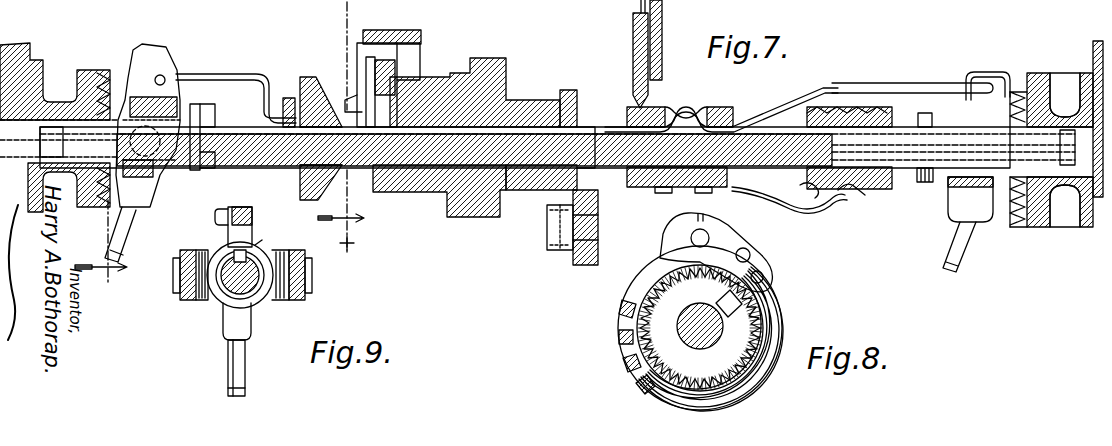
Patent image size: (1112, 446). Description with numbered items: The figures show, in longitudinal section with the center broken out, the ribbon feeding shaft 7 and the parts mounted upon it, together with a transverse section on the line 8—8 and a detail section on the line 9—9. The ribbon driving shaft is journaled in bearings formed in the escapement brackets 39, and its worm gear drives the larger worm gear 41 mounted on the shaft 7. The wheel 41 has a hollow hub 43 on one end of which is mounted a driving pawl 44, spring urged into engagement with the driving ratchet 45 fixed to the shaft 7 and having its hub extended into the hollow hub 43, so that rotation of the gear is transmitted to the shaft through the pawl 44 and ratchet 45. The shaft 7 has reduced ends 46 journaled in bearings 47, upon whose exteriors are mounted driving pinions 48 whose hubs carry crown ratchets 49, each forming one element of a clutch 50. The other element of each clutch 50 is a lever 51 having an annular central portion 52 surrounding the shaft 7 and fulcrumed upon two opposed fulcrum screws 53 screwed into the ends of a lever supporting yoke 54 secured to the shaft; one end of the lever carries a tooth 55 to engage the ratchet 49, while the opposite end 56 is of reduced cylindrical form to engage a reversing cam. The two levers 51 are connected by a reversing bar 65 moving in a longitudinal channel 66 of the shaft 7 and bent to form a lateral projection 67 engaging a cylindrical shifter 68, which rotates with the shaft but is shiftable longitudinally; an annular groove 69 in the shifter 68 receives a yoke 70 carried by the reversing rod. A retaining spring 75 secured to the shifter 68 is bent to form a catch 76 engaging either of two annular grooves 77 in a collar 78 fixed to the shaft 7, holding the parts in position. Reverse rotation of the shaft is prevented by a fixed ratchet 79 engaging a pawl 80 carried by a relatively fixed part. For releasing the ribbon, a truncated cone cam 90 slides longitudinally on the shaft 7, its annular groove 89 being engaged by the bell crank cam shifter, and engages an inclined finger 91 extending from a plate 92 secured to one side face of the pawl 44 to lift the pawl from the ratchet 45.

In FIG. 7, the ribbon feeding shaft 7 is at (904, 133).
In FIG. 7, the section line 8— 8 is at (341, 137).
In FIG. 9, the section line 9— 9 is at (101, 252).
In FIG. 7, the escapement brackets 39 is at (580, 265).
In FIG. 7, the worm gear 41 is at (482, 73).
In FIG. 8, the worm gear 41 is at (625, 373).
In FIG. 7, the hollow hub 43 is at (432, 205).
In FIG. 8, the hollow hub 43 is at (640, 352).
In FIG. 7, the driving pawl 44 is at (370, 74).
In FIG. 8, the driving pawl 44 is at (768, 257).
In FIG. 7, the driving ratchet 45 is at (392, 200).
In FIG. 8, the driving ratchet 45 is at (677, 320).
In FIG. 7, the reduced ends 46 is at (77, 120).
In FIG. 7, the bearings 47 is at (1062, 215).
In FIG. 7, the driving pinions 48 is at (38, 60).
In FIG. 7, the crown ratchets 49 is at (103, 70).
In FIG. 7, the clutch 50 is at (1012, 66).
In FIG. 7, the lever 51 is at (145, 190).
In FIG. 9, the lever 51 is at (226, 336).
In FIG. 7, the annular central portion 52 is at (165, 177).
In FIG. 9, the annular central portion 52 is at (262, 300).
In FIG. 7, the fulcrum screws 53 is at (178, 105).
In FIG. 9, the fulcrum screws 53 is at (173, 291).
In FIG. 7, the lever supporting yoke 54 is at (204, 170).
In FIG. 9, the lever supporting yoke 54 is at (270, 256).
In FIG. 7, the tooth 55 is at (128, 85).
In FIG. 7, the reduced cylindrical end 56 is at (130, 238).
In FIG. 9, the reduced cylindrical end 56 is at (246, 369).
In FIG. 7, the reversing bar 65 is at (235, 74).
In FIG. 9, the reversing bar 65 is at (216, 218).
In FIG. 7, the longitudinal channel 66 is at (262, 120).
In FIG. 9, the longitudinal channel 66 is at (222, 300).
In FIG. 7, the lateral projection 67 is at (687, 107).
In FIG. 7, the cylindrical shifter 68 is at (724, 107).
In FIG. 7, the annular groove 69 is at (643, 190).
In FIG. 7, the yoke 70 is at (636, 96).
In FIG. 7, the retaining spring 75 is at (790, 207).
In FIG. 7, the catch 76 is at (842, 203).
In FIG. 7, the annular grooves 77 is at (805, 189).
In FIG. 7, the collar 78 is at (882, 190).
In FIG. 7, the fixed ratchet 79 is at (568, 90).
In FIG. 7, the pawl 80 is at (560, 213).
In FIG. 7, the annular groove 89 is at (292, 98).
In FIG. 7, the cam 90 is at (333, 190).
In FIG. 8, the inclined finger 91 is at (770, 305).
In FIG. 8, the plate 92 is at (765, 263).